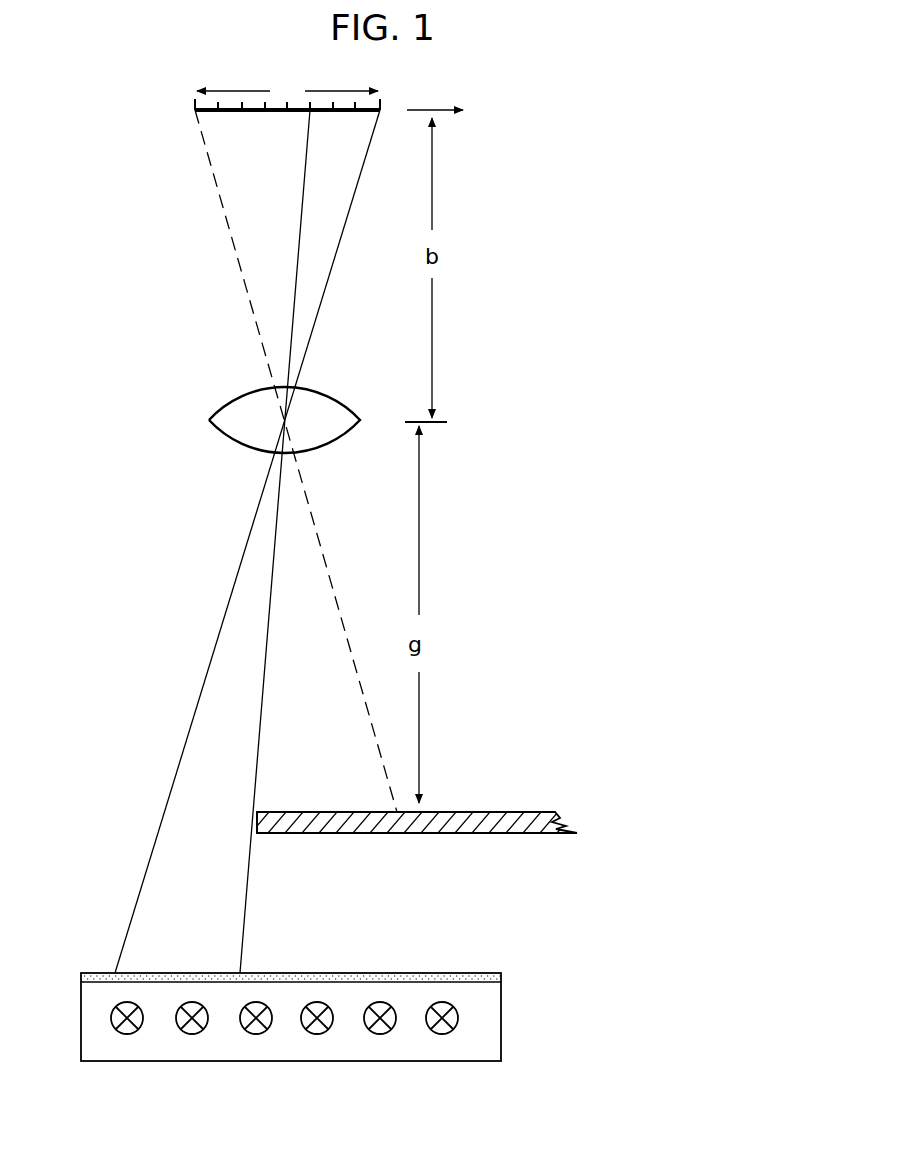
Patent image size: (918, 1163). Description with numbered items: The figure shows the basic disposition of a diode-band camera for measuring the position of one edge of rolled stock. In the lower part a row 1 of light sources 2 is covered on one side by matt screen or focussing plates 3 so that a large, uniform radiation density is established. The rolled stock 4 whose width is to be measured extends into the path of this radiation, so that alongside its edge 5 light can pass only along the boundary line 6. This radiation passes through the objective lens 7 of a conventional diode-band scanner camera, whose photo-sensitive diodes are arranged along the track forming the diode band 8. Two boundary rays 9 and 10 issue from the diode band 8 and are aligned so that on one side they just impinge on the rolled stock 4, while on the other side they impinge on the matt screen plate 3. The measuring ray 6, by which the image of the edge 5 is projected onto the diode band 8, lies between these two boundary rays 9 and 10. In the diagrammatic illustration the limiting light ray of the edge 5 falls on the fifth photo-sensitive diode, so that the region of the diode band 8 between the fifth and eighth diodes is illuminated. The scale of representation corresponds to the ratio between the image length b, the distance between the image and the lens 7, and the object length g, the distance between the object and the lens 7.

The row of light sources 1 is at (490, 1008).
The light sources 2 is at (456, 1018).
The matt screen or focussing plates 3 is at (450, 975).
The rolled stock 4 is at (449, 826).
The edge 5 is at (258, 810).
The boundary line (measuring ray) 6 is at (262, 713).
The objective lens 7 is at (231, 413).
The diode band (track) 8 is at (280, 105).
The boundary ray 9 is at (231, 240).
The boundary ray 10 is at (333, 266).